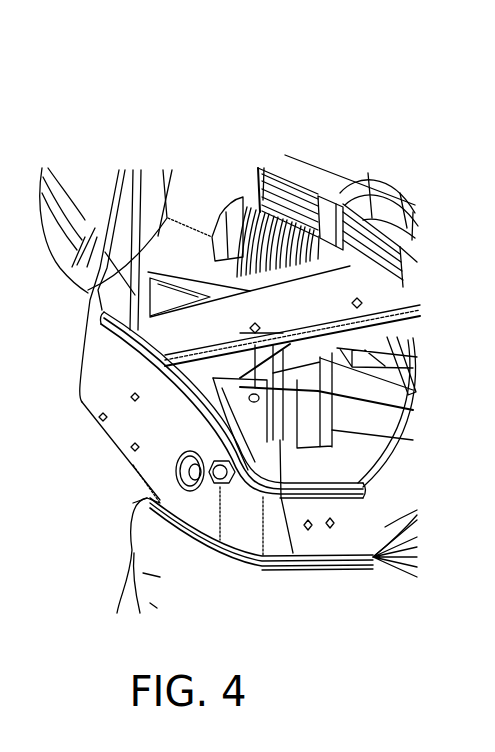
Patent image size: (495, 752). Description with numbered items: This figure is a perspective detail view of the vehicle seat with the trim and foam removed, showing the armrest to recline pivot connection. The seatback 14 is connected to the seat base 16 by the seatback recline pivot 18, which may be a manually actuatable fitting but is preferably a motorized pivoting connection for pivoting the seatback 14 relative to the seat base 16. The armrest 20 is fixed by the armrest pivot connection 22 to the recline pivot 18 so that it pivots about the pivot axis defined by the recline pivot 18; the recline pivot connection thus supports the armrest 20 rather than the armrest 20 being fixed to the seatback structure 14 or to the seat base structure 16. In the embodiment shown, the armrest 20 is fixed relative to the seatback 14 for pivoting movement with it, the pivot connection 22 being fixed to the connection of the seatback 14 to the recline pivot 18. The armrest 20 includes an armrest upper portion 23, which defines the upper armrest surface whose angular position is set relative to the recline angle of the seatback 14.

The seatback 14 is at (83, 293).
The seat base 16 is at (390, 327).
The seatback recline pivot 18 is at (260, 458).
The armrest 20 is at (393, 174).
The armrest pivot connection 22 is at (142, 417).
The armrest upper portion 23 is at (343, 193).